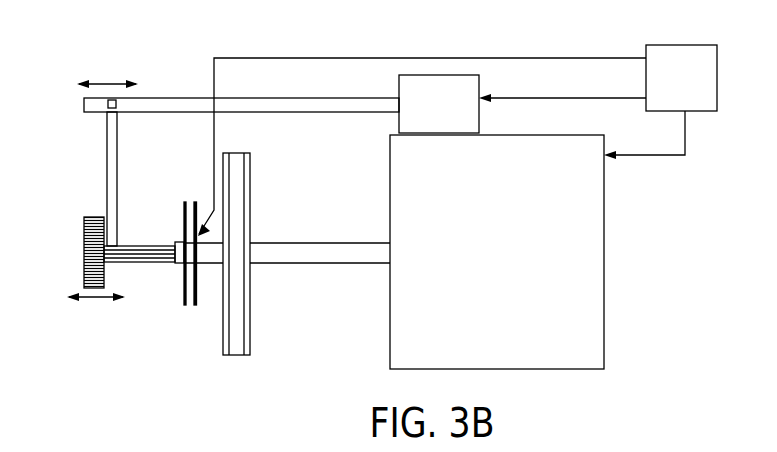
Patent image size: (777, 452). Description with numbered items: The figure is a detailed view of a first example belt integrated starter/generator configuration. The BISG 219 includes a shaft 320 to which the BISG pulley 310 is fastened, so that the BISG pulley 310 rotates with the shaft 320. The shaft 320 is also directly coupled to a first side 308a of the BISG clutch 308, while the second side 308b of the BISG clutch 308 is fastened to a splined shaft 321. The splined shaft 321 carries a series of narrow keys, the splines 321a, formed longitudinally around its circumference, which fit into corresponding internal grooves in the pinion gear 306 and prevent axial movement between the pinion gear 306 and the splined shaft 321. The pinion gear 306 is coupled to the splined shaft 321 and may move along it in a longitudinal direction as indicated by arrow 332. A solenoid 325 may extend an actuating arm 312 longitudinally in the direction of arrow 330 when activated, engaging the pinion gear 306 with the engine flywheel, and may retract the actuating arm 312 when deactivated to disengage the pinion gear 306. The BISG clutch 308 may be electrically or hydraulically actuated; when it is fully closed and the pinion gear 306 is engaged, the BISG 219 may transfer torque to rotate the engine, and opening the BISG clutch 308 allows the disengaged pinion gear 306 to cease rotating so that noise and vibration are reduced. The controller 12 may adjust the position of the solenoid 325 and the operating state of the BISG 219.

The controller 12 is at (598, 102).
The solenoid 325 is at (439, 104).
The BISG 219 is at (568, 250).
The actuating arm 312 is at (147, 98).
The arrow 330 is at (93, 80).
The pinion gear 306 is at (92, 262).
The arrow 332 is at (100, 300).
The splined shaft 321 is at (128, 247).
The splines 321a is at (145, 253).
The BISG clutch 308 is at (170, 295).
The first side of BISG clutch 308a is at (197, 270).
The second side of BISG clutch 308b is at (184, 266).
The shaft 320 is at (325, 264).
The BISG pulley 310 is at (250, 190).